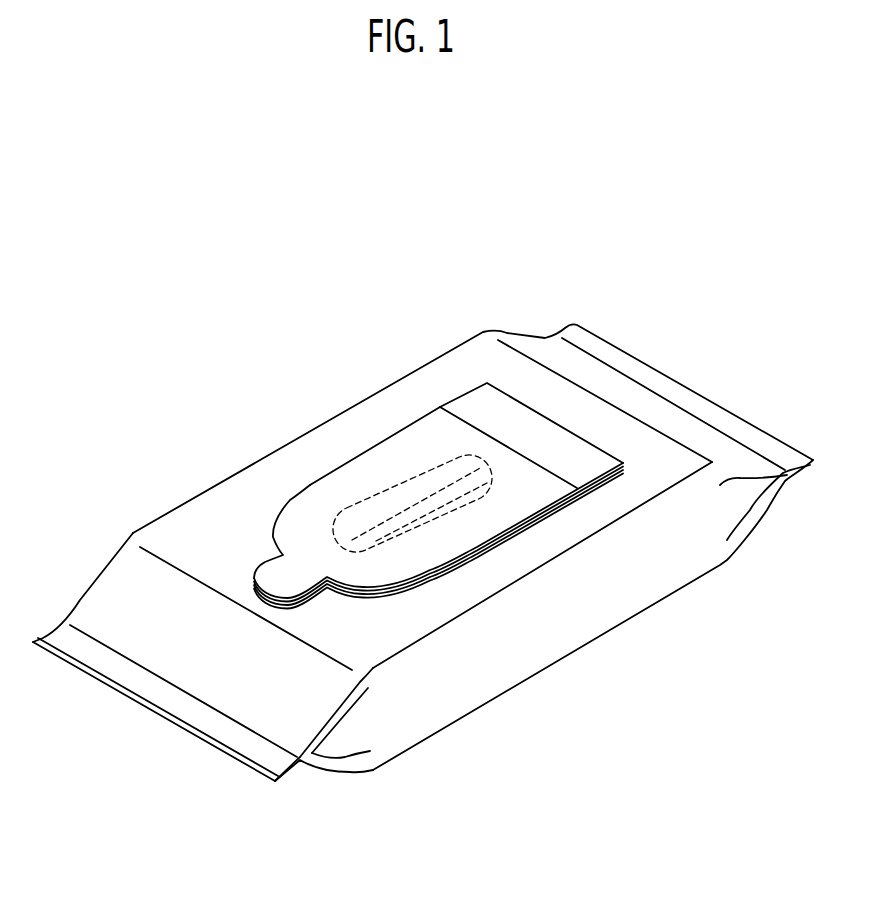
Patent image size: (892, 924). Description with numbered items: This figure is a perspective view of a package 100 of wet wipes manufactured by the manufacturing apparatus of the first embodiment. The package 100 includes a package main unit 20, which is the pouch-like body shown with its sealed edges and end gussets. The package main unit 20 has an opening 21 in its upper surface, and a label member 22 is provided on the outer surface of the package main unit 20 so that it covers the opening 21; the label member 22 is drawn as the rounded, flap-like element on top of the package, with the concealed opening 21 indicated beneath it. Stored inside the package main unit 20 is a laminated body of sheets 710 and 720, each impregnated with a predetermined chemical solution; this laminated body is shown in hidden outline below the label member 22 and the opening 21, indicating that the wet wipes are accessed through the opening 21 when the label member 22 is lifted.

The package 100 is at (423, 526).
The package main unit 20 is at (207, 513).
The opening 21 is at (382, 487).
The label member 22 is at (308, 512).
The sheet 710 is at (521, 571).
The sheet 720 is at (398, 502).